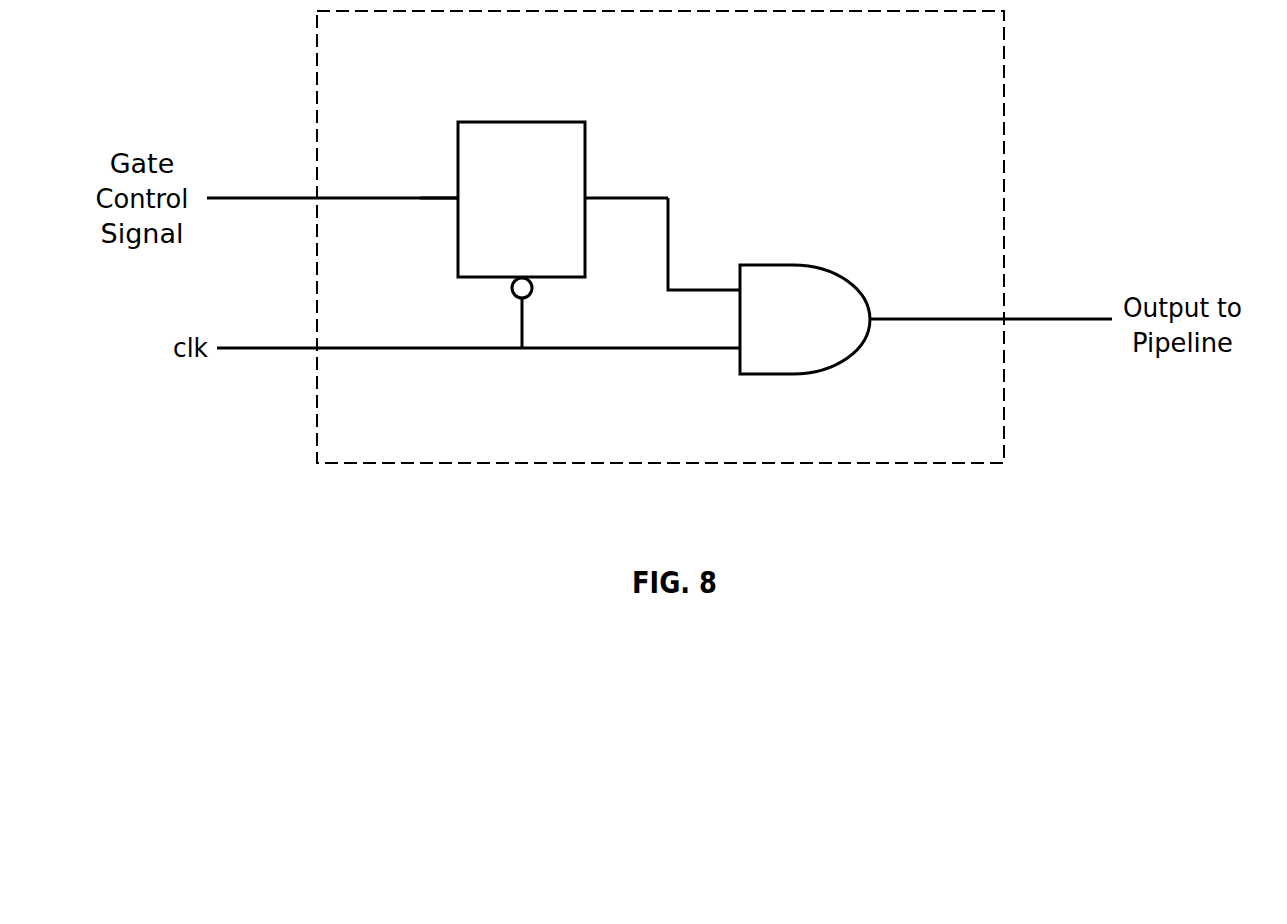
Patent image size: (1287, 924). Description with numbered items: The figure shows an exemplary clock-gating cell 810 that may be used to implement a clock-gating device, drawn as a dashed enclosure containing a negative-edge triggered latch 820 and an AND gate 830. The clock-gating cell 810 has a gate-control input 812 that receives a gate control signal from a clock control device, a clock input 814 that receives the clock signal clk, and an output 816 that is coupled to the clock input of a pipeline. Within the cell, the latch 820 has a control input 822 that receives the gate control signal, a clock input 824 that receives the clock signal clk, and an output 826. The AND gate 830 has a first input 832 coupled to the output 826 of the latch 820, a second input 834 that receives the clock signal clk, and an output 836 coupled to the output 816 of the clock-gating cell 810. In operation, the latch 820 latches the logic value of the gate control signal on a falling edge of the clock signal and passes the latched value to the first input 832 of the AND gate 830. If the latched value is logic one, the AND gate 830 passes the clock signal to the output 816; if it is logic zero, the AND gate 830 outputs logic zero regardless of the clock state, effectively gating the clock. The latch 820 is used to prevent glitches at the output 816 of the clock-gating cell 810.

The clock-gating cell 810 is at (958, 60).
The gate-control input 812 is at (315, 190).
The clock input 814 is at (315, 338).
The output 816 is at (1006, 305).
The negative-edge triggered latch 820 is at (548, 120).
The control input 822 is at (458, 195).
The clock input 824 is at (532, 293).
The output 826 is at (585, 190).
The AND gate 830 is at (813, 265).
The first input 832 is at (727, 295).
The second input 834 is at (718, 352).
The output 836 is at (873, 312).